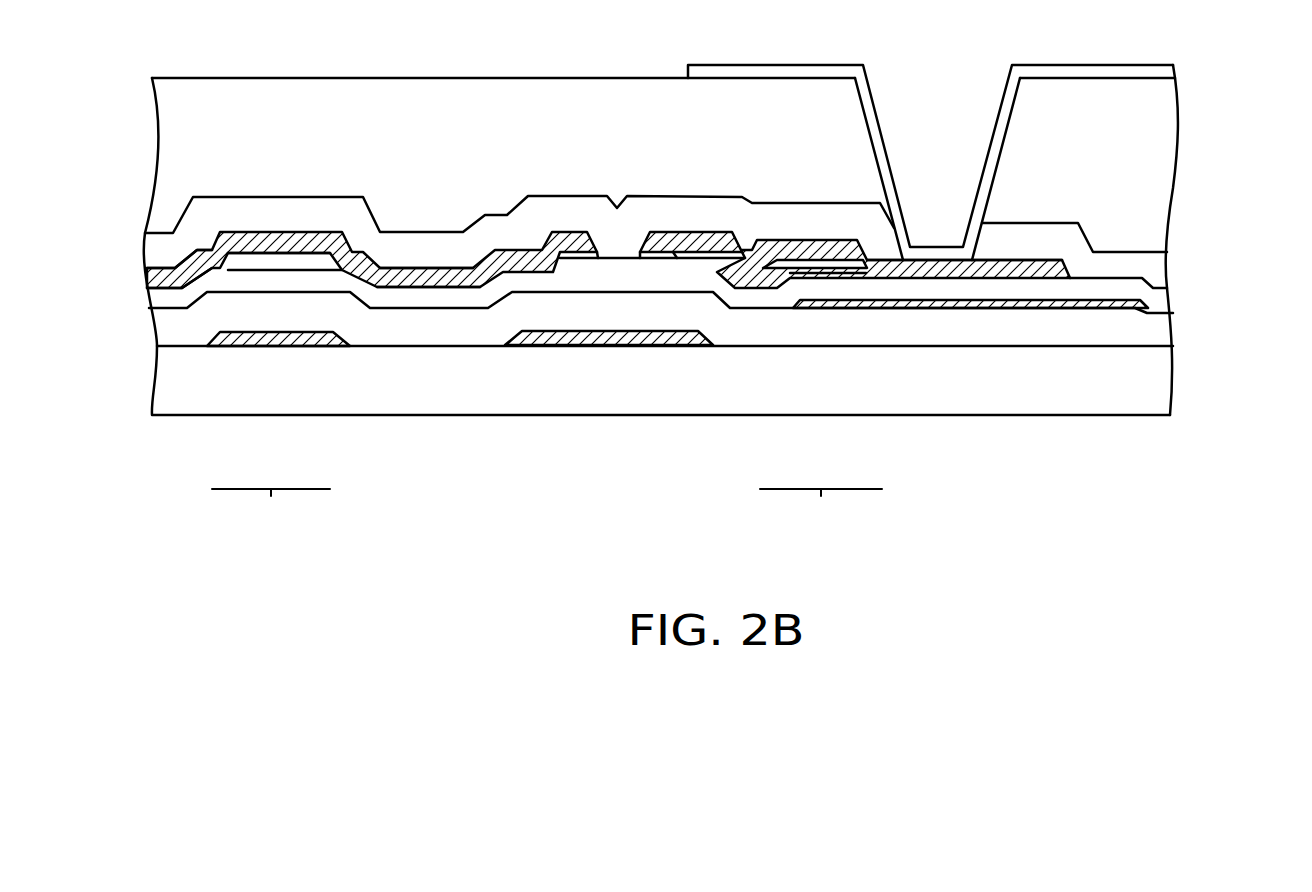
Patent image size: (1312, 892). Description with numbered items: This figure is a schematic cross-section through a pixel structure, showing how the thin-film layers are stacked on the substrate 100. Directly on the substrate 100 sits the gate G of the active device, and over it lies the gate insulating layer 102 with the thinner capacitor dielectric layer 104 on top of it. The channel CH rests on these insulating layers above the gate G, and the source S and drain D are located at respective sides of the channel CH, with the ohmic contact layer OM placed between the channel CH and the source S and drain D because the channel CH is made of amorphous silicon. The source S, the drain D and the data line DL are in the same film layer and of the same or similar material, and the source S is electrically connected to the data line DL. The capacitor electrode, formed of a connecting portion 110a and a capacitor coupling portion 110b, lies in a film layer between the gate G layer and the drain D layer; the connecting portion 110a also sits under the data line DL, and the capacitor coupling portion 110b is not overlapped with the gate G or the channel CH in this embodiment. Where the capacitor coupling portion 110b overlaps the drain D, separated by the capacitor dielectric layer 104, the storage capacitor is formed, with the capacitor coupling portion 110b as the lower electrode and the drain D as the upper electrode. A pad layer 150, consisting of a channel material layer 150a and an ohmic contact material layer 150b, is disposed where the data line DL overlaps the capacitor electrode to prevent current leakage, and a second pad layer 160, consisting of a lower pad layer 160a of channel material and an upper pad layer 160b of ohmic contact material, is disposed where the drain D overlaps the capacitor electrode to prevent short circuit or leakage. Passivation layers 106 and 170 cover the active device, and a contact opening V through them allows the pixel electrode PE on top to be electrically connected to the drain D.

The substrate 100 is at (1162, 382).
The gate insulating layer 102 is at (1163, 338).
The capacitor dielectric layer 104 is at (1155, 296).
The passivation layer 106 is at (1067, 239).
The connecting portion 110a is at (330, 338).
The capacitor coupling portion 110b is at (1135, 307).
The pad layer 150 is at (271, 513).
The channel material layer 150a is at (292, 267).
The ohmic contact material layer 150b is at (232, 257).
The pad layer 160 is at (821, 513).
The lower pad layer 160a is at (778, 283).
The upper pad layer 160b is at (815, 263).
The passivation layer 170 is at (1165, 162).
The pixel electrode PE is at (1168, 72).
The contact opening V is at (867, 122).
The data line DL is at (273, 238).
The source S is at (456, 277).
The channel CH is at (569, 262).
The gate G is at (603, 338).
The ohmic contact layer OM is at (657, 257).
The drain D is at (990, 272).